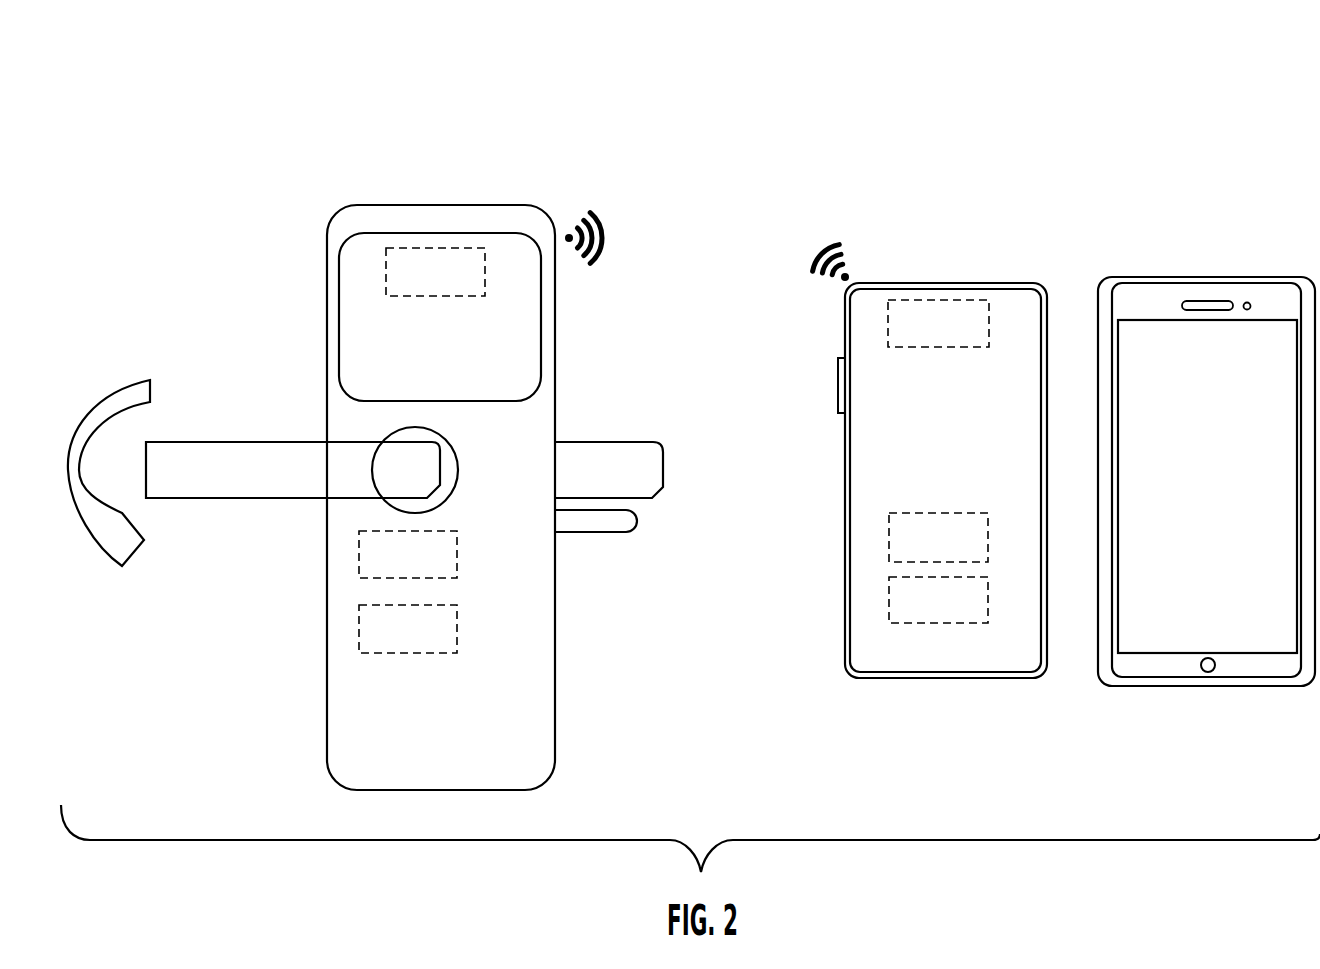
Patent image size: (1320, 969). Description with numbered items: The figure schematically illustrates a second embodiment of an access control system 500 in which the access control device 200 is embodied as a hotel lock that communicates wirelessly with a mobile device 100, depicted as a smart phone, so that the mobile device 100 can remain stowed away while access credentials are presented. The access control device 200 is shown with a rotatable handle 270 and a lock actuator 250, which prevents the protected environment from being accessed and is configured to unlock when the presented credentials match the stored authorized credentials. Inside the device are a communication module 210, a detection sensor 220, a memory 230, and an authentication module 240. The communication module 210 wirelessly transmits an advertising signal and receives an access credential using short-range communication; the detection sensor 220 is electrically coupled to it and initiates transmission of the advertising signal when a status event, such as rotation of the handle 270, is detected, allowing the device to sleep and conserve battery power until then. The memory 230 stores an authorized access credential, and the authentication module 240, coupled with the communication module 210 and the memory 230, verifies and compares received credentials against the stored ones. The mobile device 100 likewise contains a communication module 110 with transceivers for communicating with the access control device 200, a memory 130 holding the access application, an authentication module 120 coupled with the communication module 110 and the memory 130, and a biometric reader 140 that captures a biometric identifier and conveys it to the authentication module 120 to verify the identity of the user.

The access control system 500 is at (614, 100).
The access control device 200 is at (300, 182).
The communication module 210 is at (440, 257).
The detection sensor 220 is at (378, 437).
The memory 230 is at (378, 558).
The authentication module 240 is at (378, 634).
The lock actuator 250 is at (556, 440).
The handle 270 is at (253, 485).
The mobile device 100 is at (1094, 196).
The communication module 110 is at (945, 318).
The authentication module 120 is at (952, 623).
The memory 130 is at (910, 543).
The biometric reader 140 is at (1248, 301).